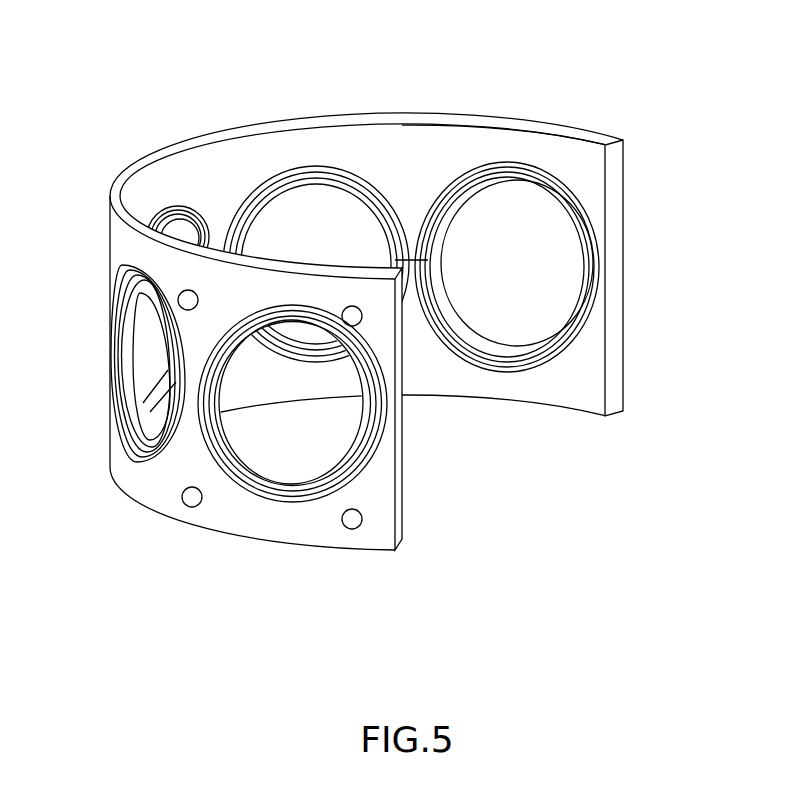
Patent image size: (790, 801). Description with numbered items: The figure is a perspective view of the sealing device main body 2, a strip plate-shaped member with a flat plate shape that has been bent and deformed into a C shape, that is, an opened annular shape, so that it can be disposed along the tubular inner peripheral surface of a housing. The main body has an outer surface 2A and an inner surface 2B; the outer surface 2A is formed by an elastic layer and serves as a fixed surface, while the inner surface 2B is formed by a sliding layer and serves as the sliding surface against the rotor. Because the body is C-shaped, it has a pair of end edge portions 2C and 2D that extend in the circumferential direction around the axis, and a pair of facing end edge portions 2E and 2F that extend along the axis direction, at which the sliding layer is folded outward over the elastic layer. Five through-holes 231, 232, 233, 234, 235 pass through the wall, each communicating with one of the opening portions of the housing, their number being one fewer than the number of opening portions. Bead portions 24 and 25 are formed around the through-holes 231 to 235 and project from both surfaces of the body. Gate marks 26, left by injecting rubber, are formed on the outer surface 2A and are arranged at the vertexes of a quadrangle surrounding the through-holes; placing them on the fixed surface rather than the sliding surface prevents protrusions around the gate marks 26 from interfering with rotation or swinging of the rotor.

The sealing device main body 2 is at (408, 289).
The outer surface 2A is at (383, 488).
The inner surface 2B is at (572, 380).
The end edge portion 2C is at (408, 117).
The end edge portion 2D is at (518, 403).
The end edge portion 2E is at (613, 173).
The end edge portion 2F is at (402, 523).
The bead portion 24 is at (133, 267).
The bead portion 25 is at (150, 220).
The gate mark 26 is at (186, 300).
The through-hole 231 is at (441, 235).
The through-hole 232 is at (383, 237).
The through-hole 233 is at (201, 238).
The through-hole 234 is at (138, 445).
The through-hole 235 is at (254, 468).